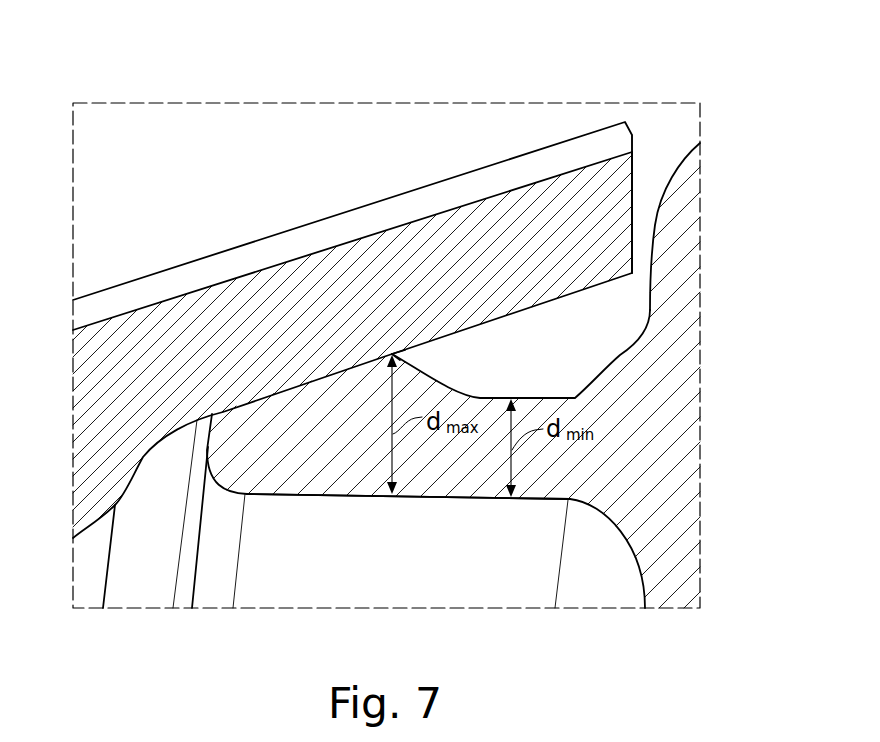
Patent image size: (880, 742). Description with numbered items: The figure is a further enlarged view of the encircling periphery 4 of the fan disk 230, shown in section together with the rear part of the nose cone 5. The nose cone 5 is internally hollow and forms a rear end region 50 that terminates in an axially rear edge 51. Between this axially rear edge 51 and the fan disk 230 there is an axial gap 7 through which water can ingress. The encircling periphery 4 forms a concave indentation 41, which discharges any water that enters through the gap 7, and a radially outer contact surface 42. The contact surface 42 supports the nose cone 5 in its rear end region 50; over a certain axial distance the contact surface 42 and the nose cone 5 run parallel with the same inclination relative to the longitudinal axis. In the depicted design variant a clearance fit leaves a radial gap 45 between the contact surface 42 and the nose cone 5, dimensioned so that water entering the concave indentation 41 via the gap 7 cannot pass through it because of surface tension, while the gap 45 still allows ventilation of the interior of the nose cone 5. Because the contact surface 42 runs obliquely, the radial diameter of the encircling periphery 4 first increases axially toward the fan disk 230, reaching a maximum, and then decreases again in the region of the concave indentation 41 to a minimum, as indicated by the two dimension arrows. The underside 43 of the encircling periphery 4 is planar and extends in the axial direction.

The encircling periphery 4 is at (325, 478).
The nose cone 5 is at (97, 446).
The gap 7 is at (655, 182).
The concave indentation 41 is at (581, 385).
The contact surface 42 is at (320, 380).
The underside 43 is at (460, 498).
The radial gap 45 is at (406, 354).
The rear end region 50 is at (320, 290).
The axially rear edge 51 is at (633, 242).
The fan disk 230 is at (668, 502).